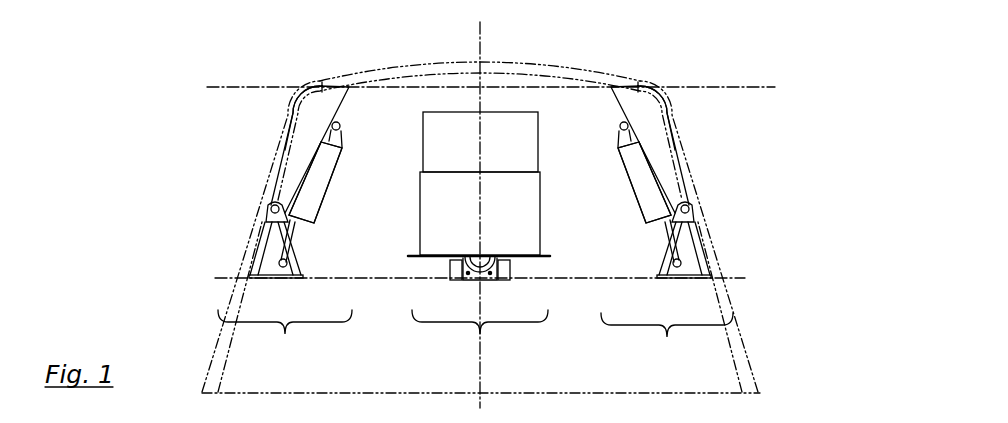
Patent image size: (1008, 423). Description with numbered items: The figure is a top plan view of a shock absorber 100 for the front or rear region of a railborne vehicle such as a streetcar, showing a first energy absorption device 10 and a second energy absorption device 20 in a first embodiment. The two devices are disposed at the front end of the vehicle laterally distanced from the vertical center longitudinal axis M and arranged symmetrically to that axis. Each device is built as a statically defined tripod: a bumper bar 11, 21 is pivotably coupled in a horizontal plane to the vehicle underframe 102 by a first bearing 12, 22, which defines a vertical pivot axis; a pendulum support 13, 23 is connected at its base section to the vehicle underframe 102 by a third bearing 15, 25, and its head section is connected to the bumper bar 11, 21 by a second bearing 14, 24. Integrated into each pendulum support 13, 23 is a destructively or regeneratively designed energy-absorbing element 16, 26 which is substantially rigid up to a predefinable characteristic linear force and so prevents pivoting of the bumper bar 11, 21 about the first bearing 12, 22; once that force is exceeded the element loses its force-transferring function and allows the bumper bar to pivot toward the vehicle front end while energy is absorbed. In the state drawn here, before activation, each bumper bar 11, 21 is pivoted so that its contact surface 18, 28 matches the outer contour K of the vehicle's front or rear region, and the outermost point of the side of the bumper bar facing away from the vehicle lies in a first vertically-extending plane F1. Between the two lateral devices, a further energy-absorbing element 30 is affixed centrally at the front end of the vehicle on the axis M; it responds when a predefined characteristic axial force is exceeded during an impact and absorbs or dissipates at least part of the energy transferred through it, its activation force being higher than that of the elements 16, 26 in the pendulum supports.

The shock absorber 100 is at (879, 266).
The vehicle underframe 102 is at (549, 232).
The first energy absorption device 10 is at (245, 213).
The second energy absorption device 20 is at (711, 217).
The further energy-absorbing element 30 is at (479, 239).
The bumper bar 11 is at (270, 147).
The first bearing 12 is at (235, 226).
The pendulum support 13 is at (222, 196).
The energy-absorbing element 16 is at (315, 182).
The second bearing 14 is at (360, 158).
The third bearing 15 is at (232, 250).
The contact surface 18 is at (219, 105).
The bumper bar 21 is at (693, 147).
The first bearing 22 is at (725, 229).
The pendulum support 23 is at (739, 196).
The energy-absorbing element 26 is at (644, 182).
The second bearing 24 is at (595, 155).
The third bearing 25 is at (725, 251).
The contact surface 28 is at (745, 108).
The outer contour K is at (480, 221).
The vertical center longitudinal axis M is at (431, 205).
The first vertically-extending plane F1 is at (480, 57).